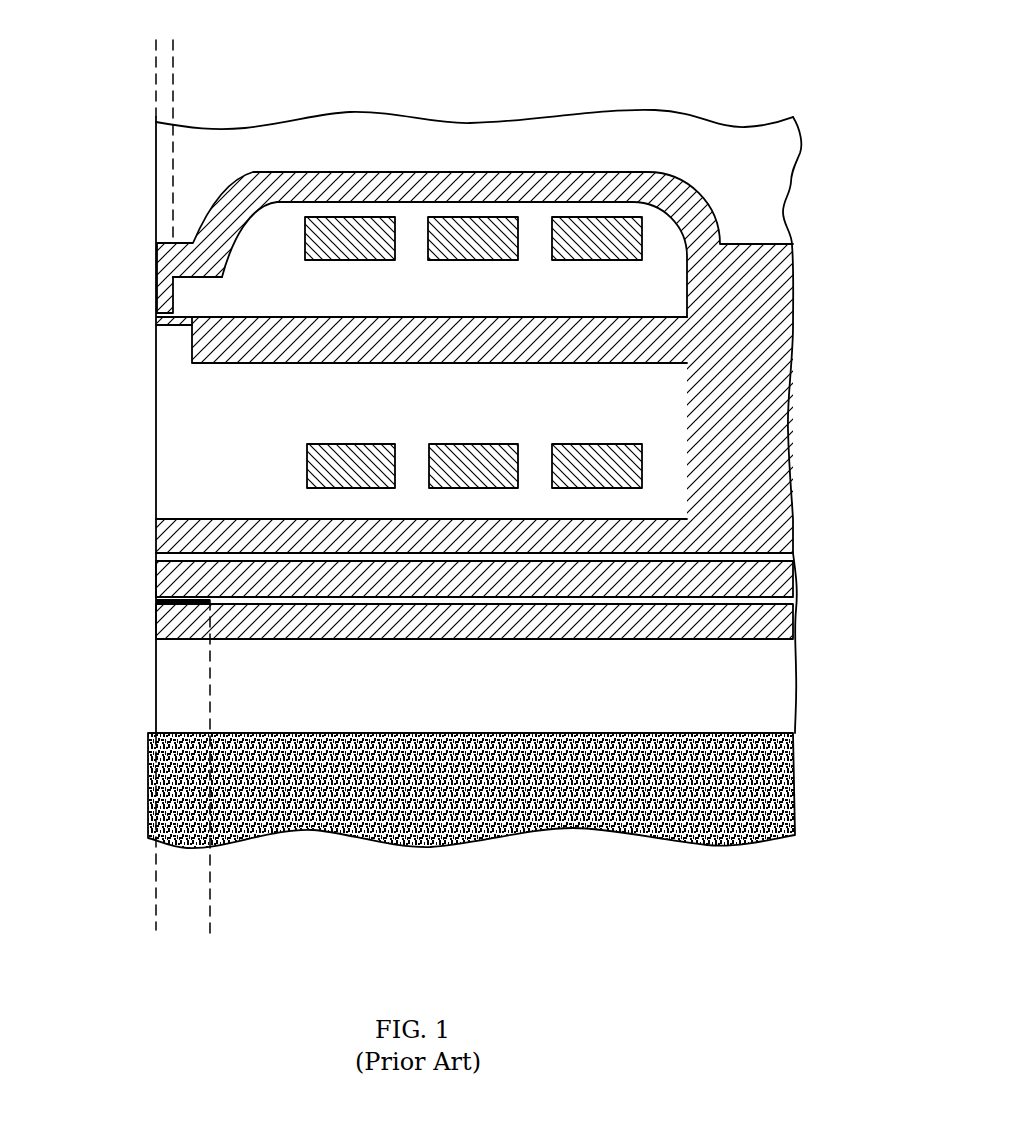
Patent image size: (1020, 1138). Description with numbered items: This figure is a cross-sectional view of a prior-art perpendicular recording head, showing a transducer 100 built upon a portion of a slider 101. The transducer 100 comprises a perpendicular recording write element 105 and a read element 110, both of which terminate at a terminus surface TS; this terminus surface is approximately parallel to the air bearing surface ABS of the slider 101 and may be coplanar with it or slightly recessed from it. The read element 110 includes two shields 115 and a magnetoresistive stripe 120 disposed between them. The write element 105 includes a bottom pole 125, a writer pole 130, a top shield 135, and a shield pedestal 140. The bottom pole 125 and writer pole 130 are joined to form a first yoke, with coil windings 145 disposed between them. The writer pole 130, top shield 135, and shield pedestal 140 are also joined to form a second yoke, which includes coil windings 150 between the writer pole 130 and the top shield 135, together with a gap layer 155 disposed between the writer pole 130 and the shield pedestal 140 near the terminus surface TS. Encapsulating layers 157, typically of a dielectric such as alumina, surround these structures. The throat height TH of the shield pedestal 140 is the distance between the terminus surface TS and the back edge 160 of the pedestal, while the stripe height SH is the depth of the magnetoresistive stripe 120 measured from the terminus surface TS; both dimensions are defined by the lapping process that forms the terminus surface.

The transducer 100 is at (494, 78).
The slider 101 is at (483, 845).
The perpendicular recording write element 105 is at (812, 160).
The read element 110 is at (812, 558).
The shields 115 is at (156, 571).
The magnetoresistive (MR) stripe 120 is at (156, 604).
The bottom pole 125 is at (156, 533).
The writer pole 130 is at (157, 326).
The top shield 135 is at (210, 200).
The shield pedestal 140 is at (157, 287).
The coil windings 145 is at (278, 468).
The coil windings 150 is at (662, 245).
The gap layer 155 is at (157, 315).
The encapsulating layers 157 is at (488, 300).
The back edge 160 is at (198, 237).
The terminus surface TS is at (156, 405).
The throat height TH is at (130, 85).
The stripe height SH is at (130, 912).
The air bearing surface ABS is at (148, 790).